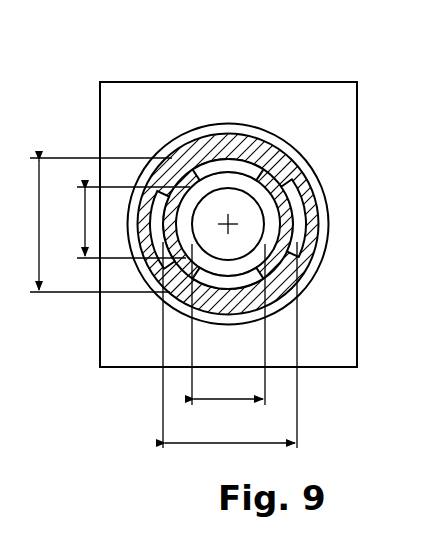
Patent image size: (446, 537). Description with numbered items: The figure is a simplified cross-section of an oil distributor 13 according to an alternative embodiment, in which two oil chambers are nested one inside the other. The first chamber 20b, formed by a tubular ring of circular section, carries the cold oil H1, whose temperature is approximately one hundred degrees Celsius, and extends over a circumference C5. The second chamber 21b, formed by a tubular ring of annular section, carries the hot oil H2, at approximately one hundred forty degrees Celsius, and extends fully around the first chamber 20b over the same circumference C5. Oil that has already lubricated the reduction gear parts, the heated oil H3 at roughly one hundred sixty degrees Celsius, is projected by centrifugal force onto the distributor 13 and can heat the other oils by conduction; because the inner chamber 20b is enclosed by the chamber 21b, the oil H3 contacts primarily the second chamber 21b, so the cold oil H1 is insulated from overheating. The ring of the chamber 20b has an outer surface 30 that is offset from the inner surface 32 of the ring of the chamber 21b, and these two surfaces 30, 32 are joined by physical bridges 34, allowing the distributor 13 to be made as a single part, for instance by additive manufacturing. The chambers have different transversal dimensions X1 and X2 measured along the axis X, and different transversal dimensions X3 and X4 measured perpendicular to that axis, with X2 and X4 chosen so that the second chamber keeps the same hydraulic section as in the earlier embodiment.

The distributor 13 is at (346, 54).
The first chamber 20b is at (238, 150).
The second chamber 21b is at (210, 142).
The outer surface 30 is at (158, 268).
The inner surface 32 is at (173, 246).
The physical bridges 34 is at (166, 156).
The circumference C5 is at (231, 228).
The cold oil H1 is at (297, 232).
The hot oil H2 is at (311, 188).
The heated oil H3 is at (281, 143).
The transversal dimension X1 is at (228, 324).
The transversal dimension X2 is at (230, 345).
The transversal dimension X3 is at (120, 222).
The transversal dimension X4 is at (88, 225).